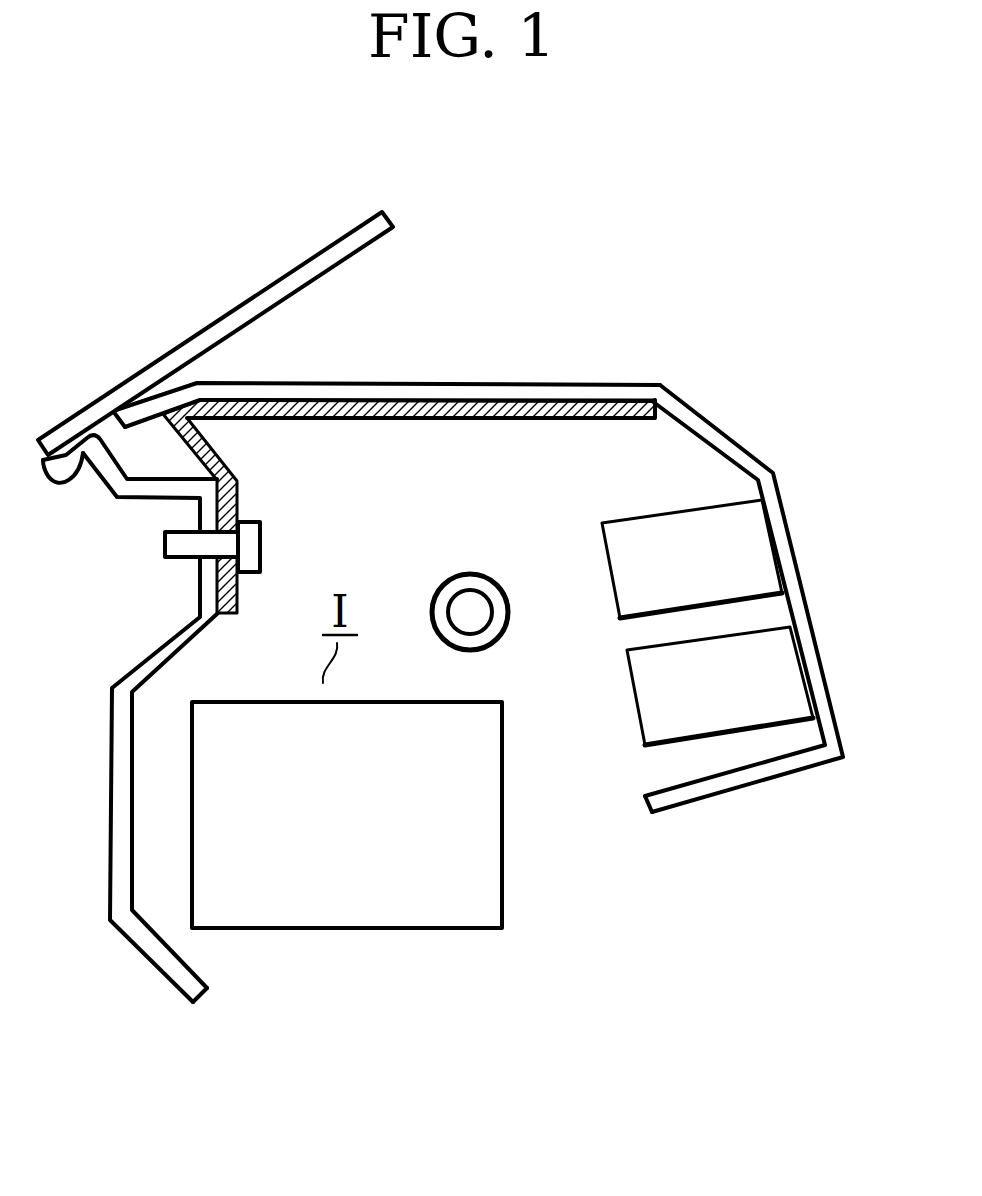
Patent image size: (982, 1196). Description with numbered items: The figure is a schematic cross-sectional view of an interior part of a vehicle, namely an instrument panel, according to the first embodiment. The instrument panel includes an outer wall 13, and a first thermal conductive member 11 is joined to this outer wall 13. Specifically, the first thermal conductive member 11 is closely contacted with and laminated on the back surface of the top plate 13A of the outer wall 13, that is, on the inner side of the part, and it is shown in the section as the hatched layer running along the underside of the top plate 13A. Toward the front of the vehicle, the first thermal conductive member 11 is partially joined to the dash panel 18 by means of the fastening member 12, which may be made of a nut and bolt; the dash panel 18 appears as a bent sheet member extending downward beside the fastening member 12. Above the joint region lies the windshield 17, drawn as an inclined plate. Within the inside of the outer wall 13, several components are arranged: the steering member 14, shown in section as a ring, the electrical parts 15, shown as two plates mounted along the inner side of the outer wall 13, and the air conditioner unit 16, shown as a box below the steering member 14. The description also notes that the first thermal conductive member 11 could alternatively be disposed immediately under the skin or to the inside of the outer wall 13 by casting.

The first thermal conductive member 11 is at (377, 422).
The fastening member 12 is at (262, 542).
The outer wall 13 is at (745, 450).
The top plate 13A is at (472, 384).
The steering member 14 is at (470, 574).
The electrical parts 15 is at (614, 601).
The air conditioner unit 16 is at (503, 858).
The windshield 17 is at (213, 322).
The dash panel 18 is at (130, 672).